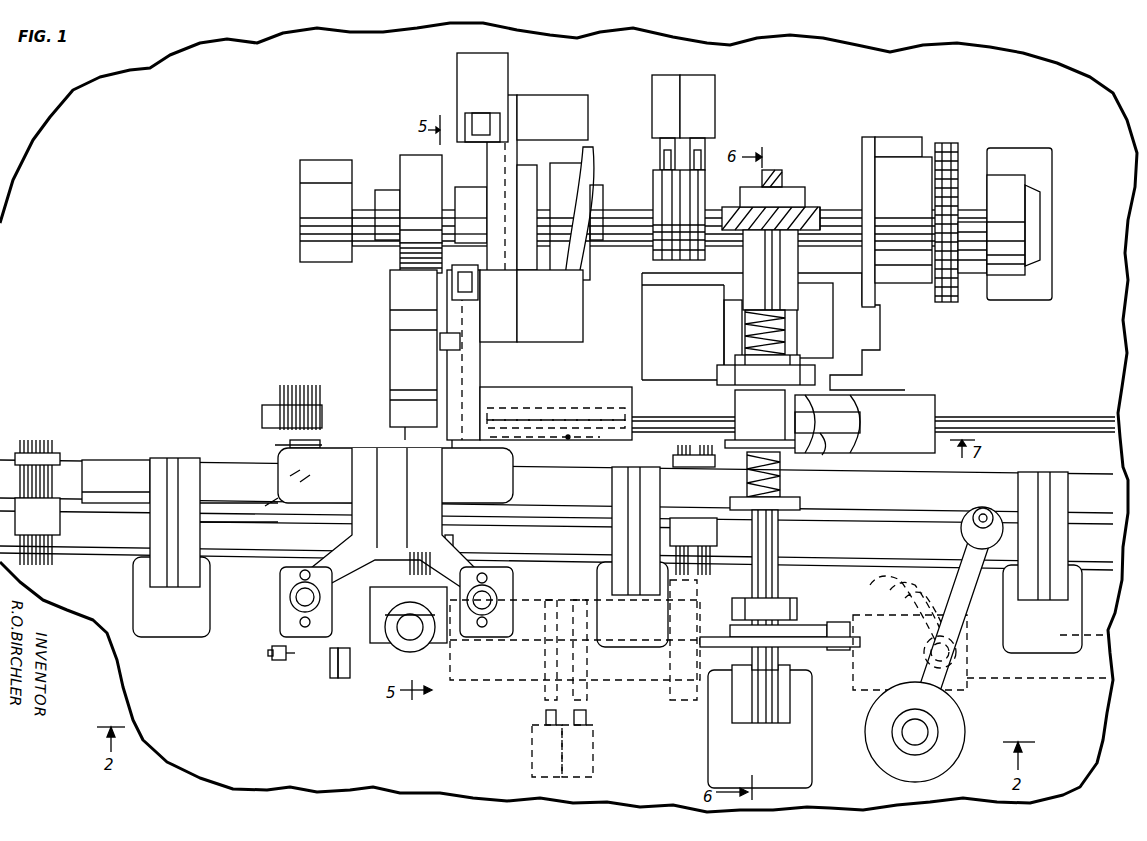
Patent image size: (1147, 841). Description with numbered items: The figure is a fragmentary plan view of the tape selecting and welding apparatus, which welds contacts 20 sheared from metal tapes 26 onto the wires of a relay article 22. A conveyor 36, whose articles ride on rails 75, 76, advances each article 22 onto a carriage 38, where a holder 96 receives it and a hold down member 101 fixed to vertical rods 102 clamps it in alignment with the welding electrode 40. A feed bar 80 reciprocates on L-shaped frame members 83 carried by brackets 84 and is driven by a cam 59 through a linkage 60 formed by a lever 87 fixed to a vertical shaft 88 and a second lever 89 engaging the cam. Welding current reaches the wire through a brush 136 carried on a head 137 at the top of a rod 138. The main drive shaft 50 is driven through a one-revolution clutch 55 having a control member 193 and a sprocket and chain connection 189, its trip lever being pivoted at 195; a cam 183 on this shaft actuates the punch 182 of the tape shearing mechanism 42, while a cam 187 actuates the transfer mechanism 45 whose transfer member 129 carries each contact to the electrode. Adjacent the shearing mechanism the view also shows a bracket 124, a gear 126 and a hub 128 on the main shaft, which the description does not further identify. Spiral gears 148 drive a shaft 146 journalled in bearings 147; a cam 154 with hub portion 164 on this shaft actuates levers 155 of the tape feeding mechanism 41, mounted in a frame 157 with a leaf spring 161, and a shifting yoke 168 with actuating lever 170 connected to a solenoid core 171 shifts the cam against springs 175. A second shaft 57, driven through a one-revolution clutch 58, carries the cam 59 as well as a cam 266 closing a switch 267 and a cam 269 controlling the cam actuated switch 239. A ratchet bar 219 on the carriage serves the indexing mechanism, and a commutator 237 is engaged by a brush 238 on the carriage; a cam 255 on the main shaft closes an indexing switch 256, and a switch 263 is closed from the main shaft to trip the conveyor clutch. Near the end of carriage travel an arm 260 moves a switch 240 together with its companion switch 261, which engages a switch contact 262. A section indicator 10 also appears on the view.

The section line 10 is at (135, 540).
The contact 20 is at (705, 455).
The relay part or article 22 is at (48, 440).
The tape 26 is at (1042, 418).
The conveyor 36 is at (100, 518).
The carriage 38 is at (272, 585).
The movable electrode or gun 40 is at (458, 305).
The tape feeding mechanism 41 is at (880, 385).
The tape shearing mechanism 42 is at (478, 398).
The transfer mechanism 45 is at (570, 437).
The main drive shaft 50 is at (820, 207).
The one-revolution clutch 55 is at (898, 167).
The second shaft 57 is at (640, 665).
The one-revolution clutch 58 is at (697, 700).
The cam 59 is at (905, 575).
The linkage 60 is at (963, 598).
The rail 75 is at (72, 462).
The rail 76 is at (72, 556).
The feed bar 80 is at (100, 462).
The L-shaped frame member 83 is at (140, 466).
The bracket 84 is at (150, 582).
The lever 87 is at (976, 575).
The vertical shaft 88 is at (930, 745).
The second lever 89 is at (950, 695).
The holder 96 is at (453, 541).
The hold down or clamping member 101 is at (372, 462).
The rods 102 is at (312, 600).
The bracket 124 is at (440, 346).
The gear 126 is at (420, 212).
The gear hub 128 is at (400, 260).
The transfer member 129 is at (468, 447).
The brush 136 is at (410, 560).
The head 137 is at (442, 640).
The rod 138 is at (405, 632).
The shaft 146 is at (778, 540).
The bearings 147 is at (780, 278).
The spiral gears 148 is at (780, 190).
The actuating cam 154 is at (760, 418).
The lever 155 is at (822, 450).
The frame 157 is at (885, 392).
The leaf spring 161 is at (900, 397).
The hub portion 164 is at (735, 386).
The shifting yoke 168 is at (735, 362).
The actuating lever 170 is at (735, 330).
The core 171 is at (835, 330).
The springs 175 is at (785, 338).
The punch 182 is at (462, 335).
The cam 183 is at (498, 165).
The cam 187 is at (578, 276).
The sprocket and chain connection 189 is at (950, 147).
The control member 193 is at (868, 137).
The pivot 195 is at (815, 622).
The bar 219 is at (248, 520).
The commutator 237 is at (262, 396).
The brush 238 is at (275, 445).
The cam actuated switch 239 is at (593, 745).
The switch 240 is at (333, 680).
The cam 255 is at (710, 188).
The indexing switch 256 is at (698, 125).
The arm 260 is at (282, 662).
The second switch 261 is at (345, 680).
The switch contact 262 is at (660, 175).
The switch 263 is at (666, 95).
The cam 266 is at (545, 690).
The switch 267 is at (532, 745).
The cam 269 is at (587, 695).